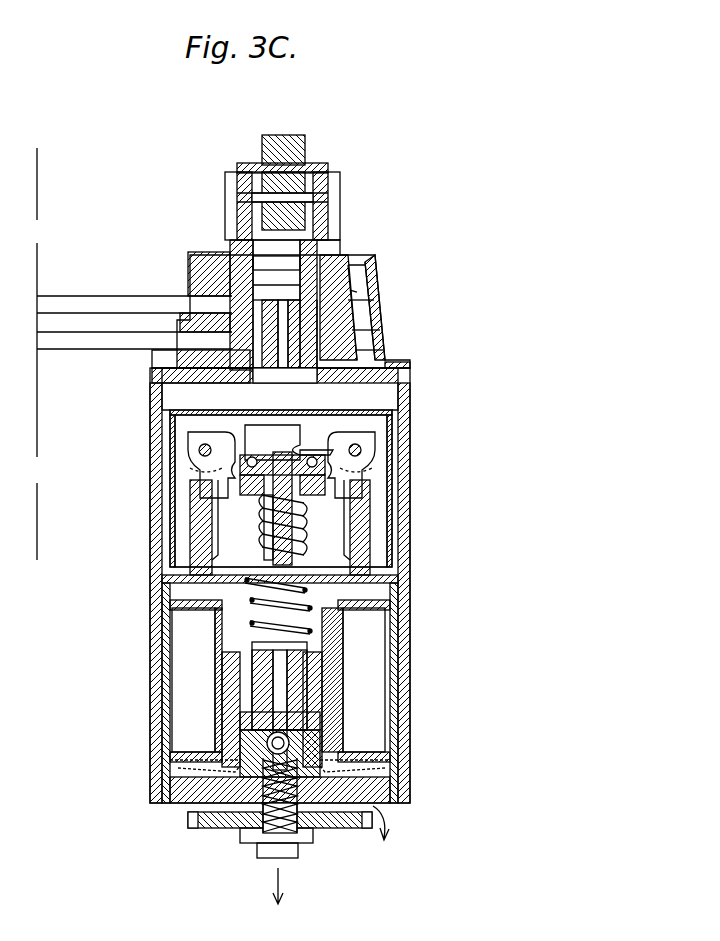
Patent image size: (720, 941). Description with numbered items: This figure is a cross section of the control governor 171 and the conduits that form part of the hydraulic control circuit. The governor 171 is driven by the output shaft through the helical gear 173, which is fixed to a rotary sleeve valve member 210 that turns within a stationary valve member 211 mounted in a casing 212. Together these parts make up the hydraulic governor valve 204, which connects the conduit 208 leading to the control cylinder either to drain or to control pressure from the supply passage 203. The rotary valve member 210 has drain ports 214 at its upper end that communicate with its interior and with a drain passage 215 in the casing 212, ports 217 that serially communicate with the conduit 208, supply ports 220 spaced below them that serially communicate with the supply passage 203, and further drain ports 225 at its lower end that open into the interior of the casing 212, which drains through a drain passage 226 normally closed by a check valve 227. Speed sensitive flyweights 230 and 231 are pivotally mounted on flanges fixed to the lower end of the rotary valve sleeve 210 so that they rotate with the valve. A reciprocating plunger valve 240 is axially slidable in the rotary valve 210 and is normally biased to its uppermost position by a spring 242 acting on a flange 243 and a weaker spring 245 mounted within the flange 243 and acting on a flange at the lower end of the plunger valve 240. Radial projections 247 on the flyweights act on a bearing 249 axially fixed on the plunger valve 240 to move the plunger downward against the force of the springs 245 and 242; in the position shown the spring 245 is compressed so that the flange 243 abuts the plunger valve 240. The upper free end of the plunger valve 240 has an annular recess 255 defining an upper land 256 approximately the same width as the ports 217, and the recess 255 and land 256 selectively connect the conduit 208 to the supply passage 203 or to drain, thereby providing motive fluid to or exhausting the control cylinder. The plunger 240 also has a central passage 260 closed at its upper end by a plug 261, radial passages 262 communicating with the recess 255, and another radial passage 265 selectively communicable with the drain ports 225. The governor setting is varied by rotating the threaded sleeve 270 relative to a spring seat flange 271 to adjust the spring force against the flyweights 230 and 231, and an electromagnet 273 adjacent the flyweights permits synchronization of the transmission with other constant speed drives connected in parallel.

The governor assembly 171 is at (134, 608).
The helical gear 173 is at (340, 180).
The supply passage 203 is at (76, 342).
The hydraulic governor valve 204 is at (368, 275).
The conduit 208 is at (74, 298).
The rotary sleeve valve member 210 is at (322, 244).
The stationary valve member 211 is at (245, 248).
The casing 212 is at (380, 336).
The drain ports 214 is at (322, 255).
The drain passage 215 is at (350, 292).
The ports 217 is at (196, 292).
The supply ports 220 is at (177, 358).
The drain ports 225 is at (383, 352).
The drain passage 226 is at (275, 855).
The check valve 227 is at (240, 742).
The flyweight 230 is at (190, 533).
The flyweight 231 is at (370, 528).
The reciprocating plunger valve 240 is at (370, 424).
The spring 242 is at (295, 608).
The flange 243 is at (318, 505).
The spring 245 is at (255, 540).
The radial projections 247 is at (275, 445).
The bearing 249 is at (240, 470).
The annular recess 255 is at (185, 326).
The upper land 256 is at (296, 280).
The central passage 260 is at (400, 374).
The plug 261 is at (276, 265).
The radial passages 262 is at (374, 318).
The radial passage 265 is at (152, 378).
The threaded sleeve 270 is at (305, 662).
The spring seat flange 271 is at (320, 702).
The electromagnet 273 is at (180, 684).